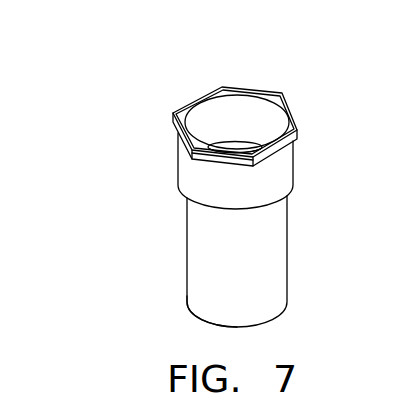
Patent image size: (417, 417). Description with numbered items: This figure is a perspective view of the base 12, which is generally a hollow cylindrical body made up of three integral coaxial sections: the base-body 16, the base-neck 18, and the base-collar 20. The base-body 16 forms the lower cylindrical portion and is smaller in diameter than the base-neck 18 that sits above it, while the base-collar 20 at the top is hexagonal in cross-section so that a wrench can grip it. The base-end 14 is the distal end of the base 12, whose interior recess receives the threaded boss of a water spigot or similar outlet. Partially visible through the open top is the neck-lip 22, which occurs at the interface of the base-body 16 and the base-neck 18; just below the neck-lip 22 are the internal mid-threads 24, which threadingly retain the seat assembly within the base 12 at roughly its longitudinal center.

The base 12 is at (113, 157).
The base-end 14 is at (187, 302).
The base-body 16 is at (307, 192).
The base-neck 18 is at (307, 139).
The base-collar 20 is at (277, 92).
The neck-lip 22 is at (230, 149).
The mid-threads 24 is at (237, 150).